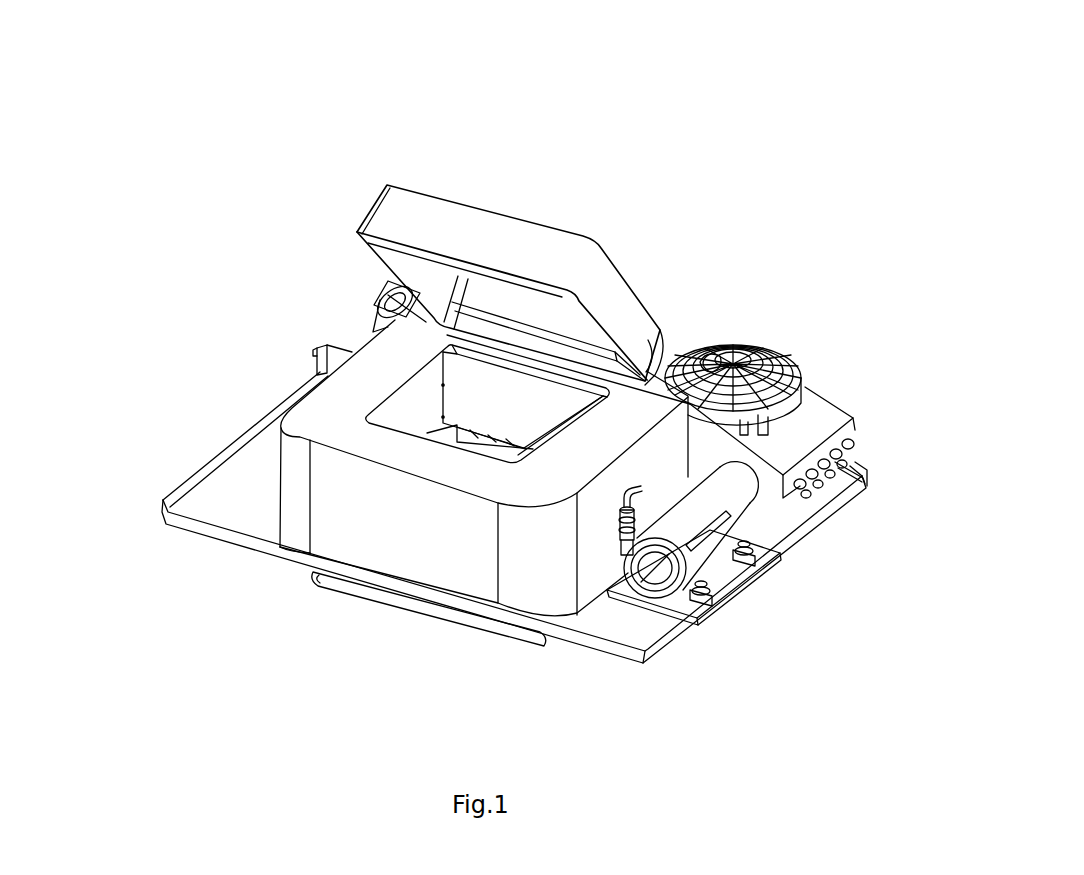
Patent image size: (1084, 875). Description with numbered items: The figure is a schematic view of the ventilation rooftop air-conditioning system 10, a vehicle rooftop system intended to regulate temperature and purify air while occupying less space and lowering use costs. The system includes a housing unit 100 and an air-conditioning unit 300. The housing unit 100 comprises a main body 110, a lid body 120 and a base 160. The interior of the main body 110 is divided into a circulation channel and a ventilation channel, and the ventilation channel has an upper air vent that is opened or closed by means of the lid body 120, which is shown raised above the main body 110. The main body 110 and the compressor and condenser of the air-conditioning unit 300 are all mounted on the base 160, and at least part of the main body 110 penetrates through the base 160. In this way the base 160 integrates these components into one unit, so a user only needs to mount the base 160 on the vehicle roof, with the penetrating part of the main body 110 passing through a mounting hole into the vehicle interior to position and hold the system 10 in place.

The ventilation rooftop air-conditioning system 10 is at (518, 47).
The housing unit 100 is at (379, 607).
The main body 110 is at (317, 491).
The lid body 120 is at (541, 228).
The base 160 is at (655, 622).
The air-conditioning unit 300 is at (763, 488).